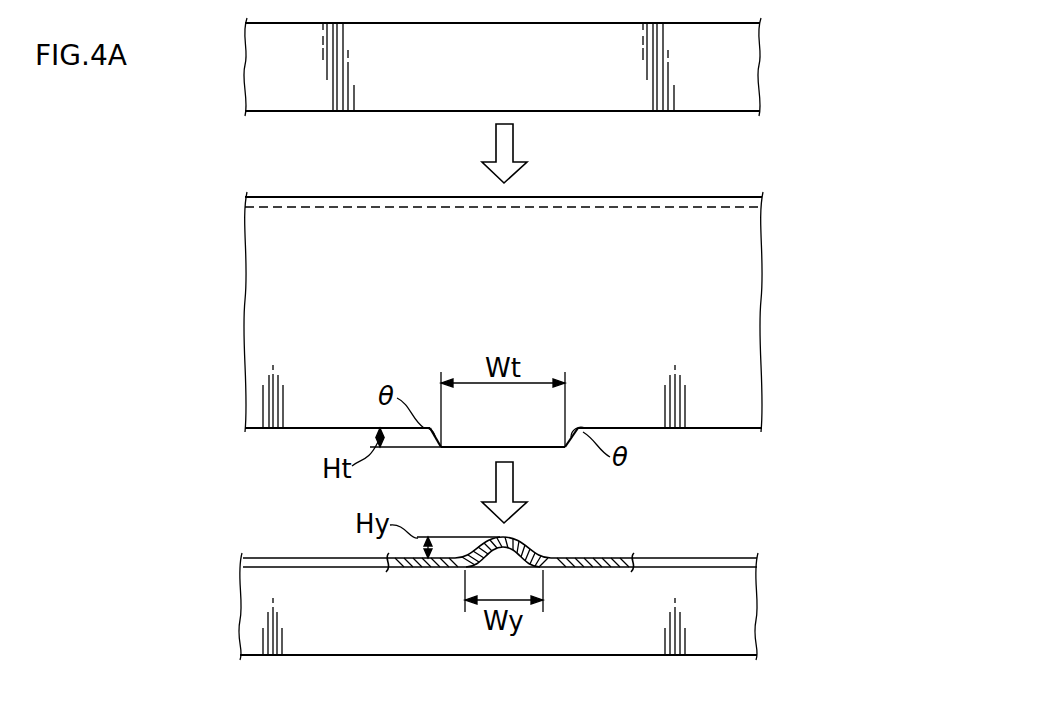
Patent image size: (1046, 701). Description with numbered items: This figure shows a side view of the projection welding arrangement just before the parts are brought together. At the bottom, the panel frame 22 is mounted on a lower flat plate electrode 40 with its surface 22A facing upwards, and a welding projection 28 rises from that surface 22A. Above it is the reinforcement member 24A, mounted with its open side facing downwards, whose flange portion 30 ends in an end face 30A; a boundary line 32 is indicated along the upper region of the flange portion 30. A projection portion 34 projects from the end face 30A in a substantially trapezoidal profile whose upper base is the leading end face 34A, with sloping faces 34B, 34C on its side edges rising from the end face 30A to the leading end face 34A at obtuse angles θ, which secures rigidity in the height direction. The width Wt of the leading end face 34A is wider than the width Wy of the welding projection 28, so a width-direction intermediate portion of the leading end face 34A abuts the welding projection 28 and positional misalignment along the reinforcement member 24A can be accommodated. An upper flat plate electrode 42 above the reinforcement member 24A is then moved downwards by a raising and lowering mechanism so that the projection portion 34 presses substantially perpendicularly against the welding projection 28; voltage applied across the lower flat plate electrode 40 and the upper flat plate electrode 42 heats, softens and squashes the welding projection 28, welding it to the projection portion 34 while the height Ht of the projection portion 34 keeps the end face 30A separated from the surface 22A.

The upper flat plate electrode 42 is at (733, 111).
The boundary line of die 32 is at (616, 211).
The flange portion 30 is at (537, 332).
The end face of flange portion 30A is at (687, 430).
The projection portion 34 is at (505, 481).
The leading end face of projection portion 34A is at (530, 449).
The sloping face of projection portion 34B is at (437, 449).
The sloping face of projection portion 34C is at (575, 439).
The reinforcement member 24A is at (208, 280).
The panel frame 22 is at (513, 533).
The surface of panel frame 22A is at (500, 533).
The welding projection 28 is at (528, 548).
The lower flat plate electrode 40 is at (732, 655).